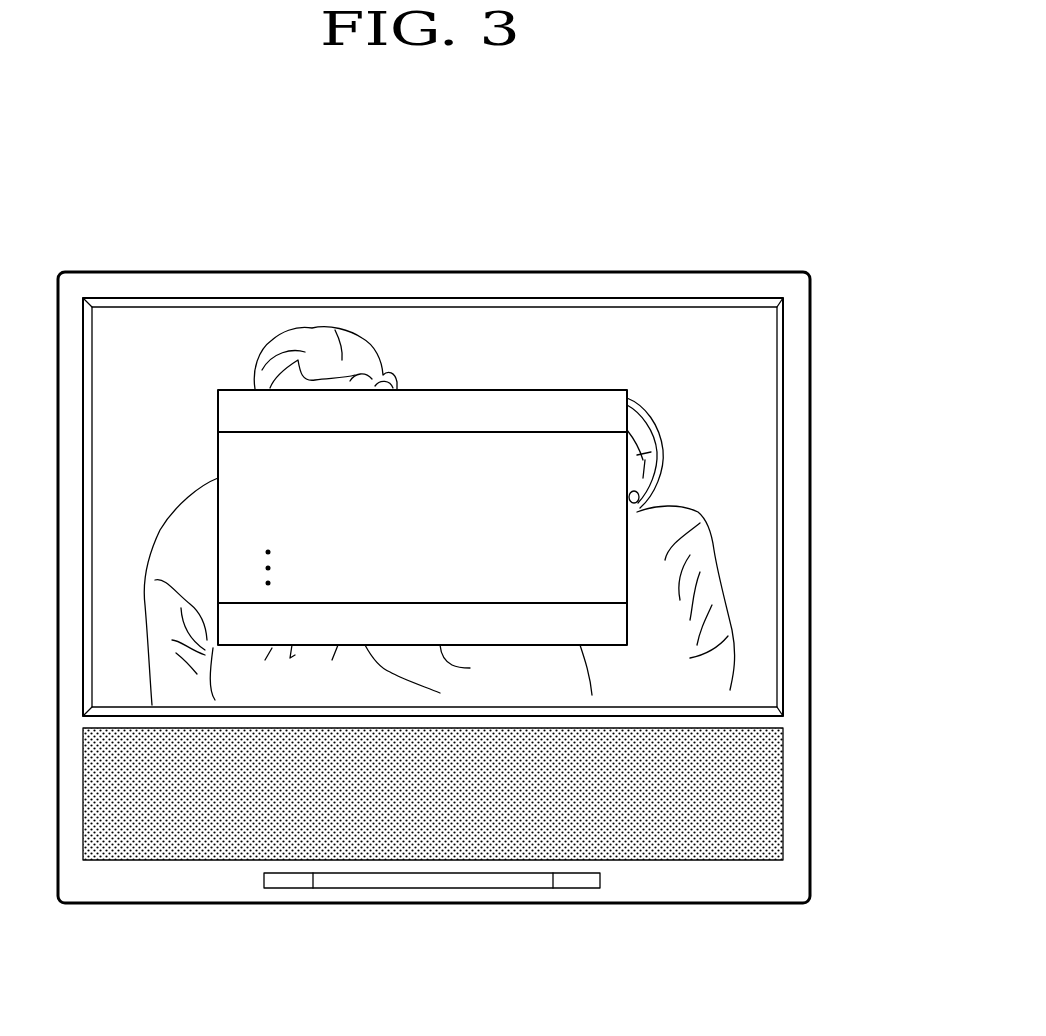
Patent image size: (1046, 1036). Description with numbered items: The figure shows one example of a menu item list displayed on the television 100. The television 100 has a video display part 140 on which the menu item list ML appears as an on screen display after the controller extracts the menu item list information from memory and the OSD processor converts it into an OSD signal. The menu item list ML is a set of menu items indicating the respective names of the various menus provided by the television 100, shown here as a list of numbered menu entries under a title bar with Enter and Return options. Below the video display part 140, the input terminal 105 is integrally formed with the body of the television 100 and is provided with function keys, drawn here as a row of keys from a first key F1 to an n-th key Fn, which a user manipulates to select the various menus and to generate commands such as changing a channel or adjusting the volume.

The television 100 is at (712, 174).
The video display part 140 is at (758, 519).
The input terminal 105 is at (512, 927).
The menu item list ML is at (493, 392).
The first function key F1 is at (285, 888).
The n-th function key Fn is at (607, 881).